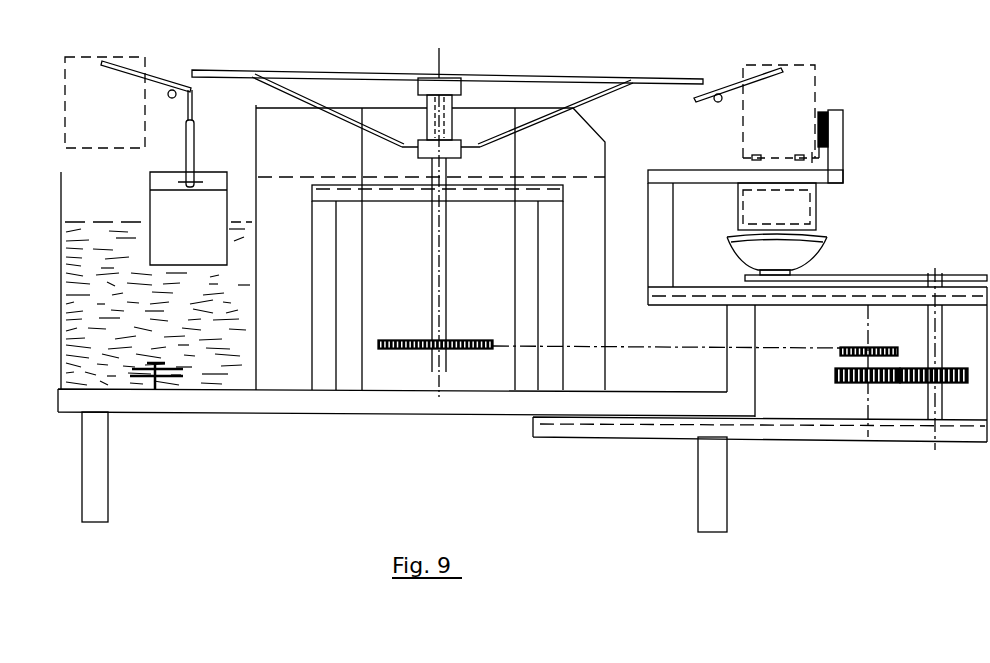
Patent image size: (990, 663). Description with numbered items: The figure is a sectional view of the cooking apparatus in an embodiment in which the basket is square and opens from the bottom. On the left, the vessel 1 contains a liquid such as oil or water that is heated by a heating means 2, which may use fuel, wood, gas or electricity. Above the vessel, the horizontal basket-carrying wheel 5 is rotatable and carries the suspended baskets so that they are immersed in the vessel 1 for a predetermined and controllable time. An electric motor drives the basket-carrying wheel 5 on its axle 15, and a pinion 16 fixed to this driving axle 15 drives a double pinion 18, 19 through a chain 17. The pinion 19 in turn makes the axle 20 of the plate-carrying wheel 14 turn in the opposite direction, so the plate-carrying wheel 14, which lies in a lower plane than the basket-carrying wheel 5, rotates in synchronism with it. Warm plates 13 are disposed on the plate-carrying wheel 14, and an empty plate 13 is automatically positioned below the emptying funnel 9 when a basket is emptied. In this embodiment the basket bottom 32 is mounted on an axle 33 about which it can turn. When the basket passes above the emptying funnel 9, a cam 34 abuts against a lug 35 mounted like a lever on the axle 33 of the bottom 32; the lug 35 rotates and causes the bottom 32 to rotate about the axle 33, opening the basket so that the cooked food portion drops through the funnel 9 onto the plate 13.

The vessel 1 is at (72, 378).
The heating means 2 is at (186, 378).
The basket-carrying wheel 5 is at (483, 79).
The emptying funnel 9 is at (830, 177).
The warm plate 13 is at (823, 247).
The plate-carrying wheel 14 is at (906, 278).
The driving axle 15 is at (432, 358).
The pinion 16 is at (468, 350).
The chain 17 is at (637, 348).
The double pinion 18 is at (855, 383).
The pinion 19 is at (912, 383).
The axle 20 is at (940, 335).
The bottom 32 is at (798, 213).
The axle 33 is at (745, 157).
The cam 34 is at (835, 135).
The lug 35 is at (833, 110).